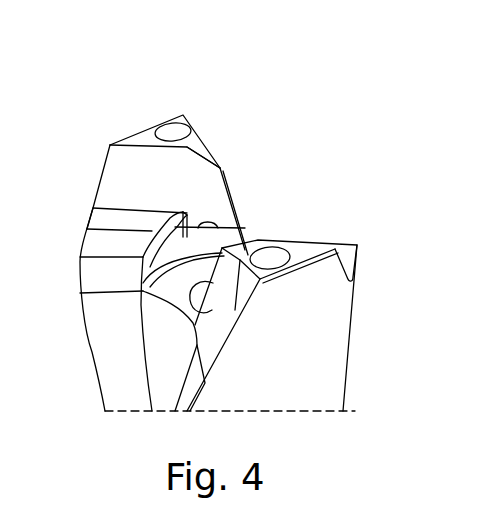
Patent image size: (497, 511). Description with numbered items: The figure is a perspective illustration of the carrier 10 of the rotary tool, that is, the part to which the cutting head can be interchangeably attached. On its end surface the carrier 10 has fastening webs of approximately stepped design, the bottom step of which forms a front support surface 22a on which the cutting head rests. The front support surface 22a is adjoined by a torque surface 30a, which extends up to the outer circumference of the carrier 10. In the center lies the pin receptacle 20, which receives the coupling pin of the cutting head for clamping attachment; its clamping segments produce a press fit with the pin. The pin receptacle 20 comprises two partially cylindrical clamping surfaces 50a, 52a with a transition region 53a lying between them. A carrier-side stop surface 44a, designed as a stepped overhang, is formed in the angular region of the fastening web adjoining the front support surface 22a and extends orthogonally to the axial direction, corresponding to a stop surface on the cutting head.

The carrier 10 is at (295, 120).
The pin receptacle 20 is at (240, 232).
The front support surface 22a is at (87, 225).
The torque surface 30a is at (129, 171).
The stop surface 44a is at (214, 246).
The clamping surface 50a is at (163, 258).
The clamping surface 52a is at (233, 232).
The transition region 53a is at (180, 207).